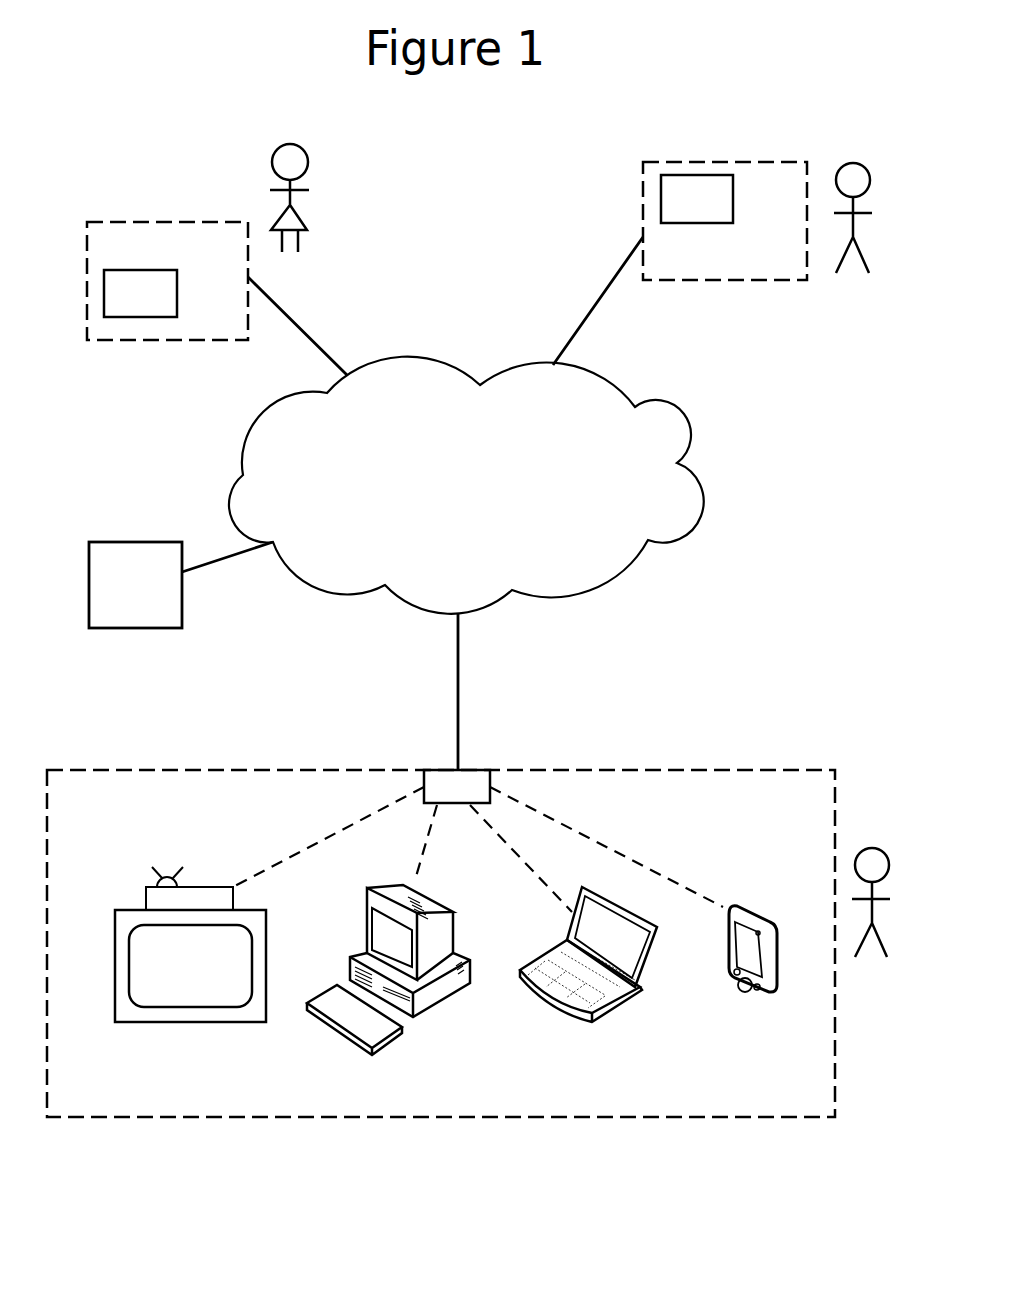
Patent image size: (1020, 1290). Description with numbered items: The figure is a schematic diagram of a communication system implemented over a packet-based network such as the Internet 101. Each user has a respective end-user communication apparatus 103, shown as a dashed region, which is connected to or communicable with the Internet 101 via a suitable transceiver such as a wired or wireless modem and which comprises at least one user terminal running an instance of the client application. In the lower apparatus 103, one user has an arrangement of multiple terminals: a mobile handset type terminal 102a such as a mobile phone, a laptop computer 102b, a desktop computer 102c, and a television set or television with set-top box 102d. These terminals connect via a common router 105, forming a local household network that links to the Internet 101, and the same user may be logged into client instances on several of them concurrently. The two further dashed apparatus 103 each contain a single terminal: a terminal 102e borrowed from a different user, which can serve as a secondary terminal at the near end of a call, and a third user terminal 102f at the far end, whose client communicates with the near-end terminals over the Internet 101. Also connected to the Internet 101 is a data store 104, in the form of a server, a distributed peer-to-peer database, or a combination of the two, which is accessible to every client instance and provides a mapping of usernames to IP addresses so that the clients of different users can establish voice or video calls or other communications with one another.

The Internet 101 is at (700, 492).
The mobile handset type terminal 102a is at (762, 1002).
The laptop computer 102b is at (615, 1013).
The desktop computer 102c is at (435, 1012).
The television set or television with set-top box 102d is at (206, 1023).
The terminal borrowed from a different user 102e is at (695, 175).
The third user terminal 102f is at (140, 317).
The end-user communication apparatus 103 is at (166, 222).
The data store 104 is at (119, 628).
The common router 105 is at (477, 773).